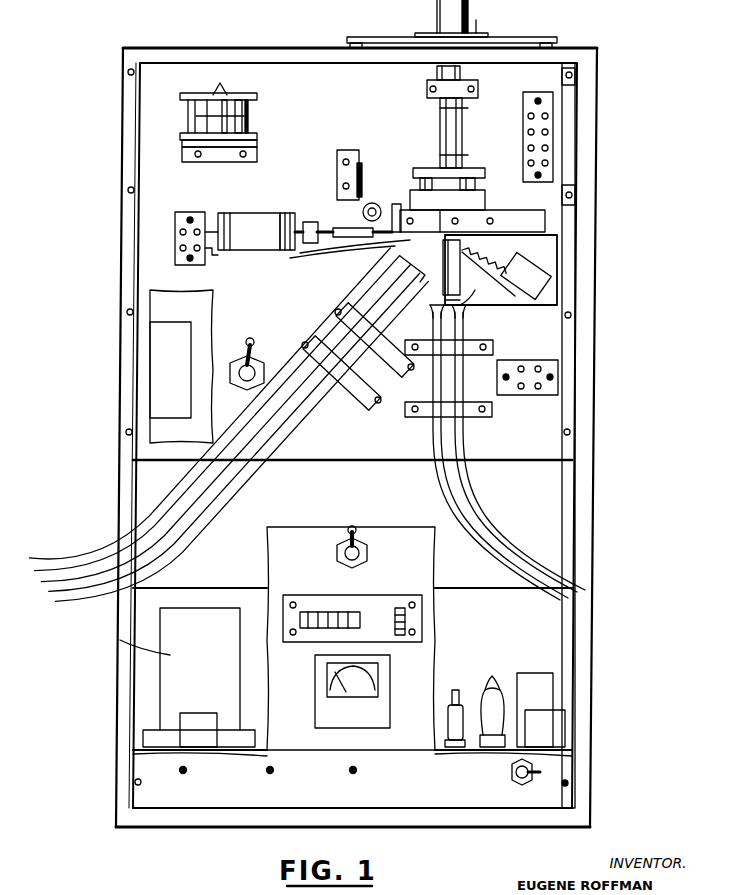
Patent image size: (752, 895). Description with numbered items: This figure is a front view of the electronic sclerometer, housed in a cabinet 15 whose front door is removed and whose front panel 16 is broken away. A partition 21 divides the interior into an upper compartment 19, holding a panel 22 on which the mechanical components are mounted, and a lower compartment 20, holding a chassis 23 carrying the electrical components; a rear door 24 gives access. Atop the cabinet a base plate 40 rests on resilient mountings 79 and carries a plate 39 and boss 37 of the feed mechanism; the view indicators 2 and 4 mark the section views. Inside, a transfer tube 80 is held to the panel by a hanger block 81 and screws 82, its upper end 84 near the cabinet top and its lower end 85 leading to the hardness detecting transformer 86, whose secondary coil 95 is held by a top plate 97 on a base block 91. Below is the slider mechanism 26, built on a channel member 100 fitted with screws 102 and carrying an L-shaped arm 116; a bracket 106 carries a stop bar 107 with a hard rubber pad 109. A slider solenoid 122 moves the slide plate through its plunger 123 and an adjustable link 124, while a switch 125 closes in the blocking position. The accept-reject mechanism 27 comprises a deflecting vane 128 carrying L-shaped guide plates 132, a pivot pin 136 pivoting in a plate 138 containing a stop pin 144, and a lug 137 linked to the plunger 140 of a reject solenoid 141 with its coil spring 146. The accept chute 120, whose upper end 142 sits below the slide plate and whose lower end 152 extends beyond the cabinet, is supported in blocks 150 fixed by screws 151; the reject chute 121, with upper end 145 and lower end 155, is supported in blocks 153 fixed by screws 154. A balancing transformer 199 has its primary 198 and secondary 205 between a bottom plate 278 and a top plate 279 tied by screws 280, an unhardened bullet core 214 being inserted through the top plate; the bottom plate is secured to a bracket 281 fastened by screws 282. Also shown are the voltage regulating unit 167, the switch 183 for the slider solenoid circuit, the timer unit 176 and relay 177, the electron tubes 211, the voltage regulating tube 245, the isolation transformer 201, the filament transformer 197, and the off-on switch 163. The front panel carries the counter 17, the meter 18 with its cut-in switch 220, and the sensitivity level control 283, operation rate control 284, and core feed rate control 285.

The cabinet 15 is at (122, 135).
The upper compartment 19 is at (560, 496).
The rear door 24 is at (150, 486).
The panel 22 is at (370, 470).
The lower compartment 20 is at (580, 634).
The partition 21 is at (478, 584).
The resilient mountings 79 is at (360, 38).
The base plate 40 is at (420, 33).
The boss 37 is at (470, 14).
The plate 39 is at (478, 33).
The screws 82 is at (428, 88).
The hanger block 81 is at (432, 98).
The section line 4 is at (482, 88).
The transfer tube 80 is at (464, 131).
The upper end of transfer tube 84 is at (468, 108).
The lower end of transfer tube 85 is at (468, 155).
The hardness detecting transformer 86 is at (420, 168).
The secondary coil 95 is at (445, 178).
The top plate 97 is at (418, 172).
The section line 2 is at (400, 163).
The pad 109 is at (400, 206).
The base block 91 is at (462, 196).
The slider mechanism 26 is at (528, 210).
The screws 102 is at (455, 221).
The stop bar 107 is at (394, 210).
The L-shaped arm 116 is at (562, 185).
The switch 125 is at (349, 150).
The adjustable link 124 is at (363, 214).
The plunger 123 is at (305, 222).
The slider solenoid 122 is at (272, 212).
The channel member 100 is at (392, 247).
The bracket 106 is at (345, 252).
The accept-reject mechanism 27 is at (410, 270).
The secondary 205 is at (257, 97).
The unhardened bullet core 214 is at (220, 86).
The top plate 279 is at (250, 96).
The screws 280 is at (190, 110).
The balancing transformer 199 is at (265, 118).
The primary 198 is at (250, 128).
The screws 282 is at (198, 154).
The bottom plate 278 is at (180, 140).
The bracket 281 is at (260, 153).
The L-shaped guide plates 132 is at (447, 282).
The coil spring 146 is at (560, 268).
The plunger 140 is at (555, 282).
The reject solenoid 141 is at (556, 300).
The lug 137 is at (558, 240).
The plate 138 is at (558, 226).
The stop pin 144 is at (470, 300).
The pivot pin 136 is at (525, 303).
The accept chute 120 is at (480, 447).
The deflecting vane 128 is at (521, 337).
The upper end of accept chute 142 is at (455, 381).
The screws 151 is at (410, 410).
The lower end of accept chute 152 is at (595, 585).
The upper end of reject chute 145 is at (348, 298).
The blocks 153 is at (348, 318).
The screws 154 is at (330, 350).
The blocks 150 is at (400, 380).
The reject chute 121 is at (300, 440).
The lower end of reject chute 155 is at (70, 575).
The voltage regulating unit 167 is at (156, 368).
The switch 183 is at (250, 340).
The front panel 16 is at (285, 533).
The cut-in switch 220 is at (353, 532).
The electrically-operated counter 17 is at (380, 595).
The electric meter 18 is at (315, 690).
The chassis 23 is at (262, 738).
The electro-mechanical timer unit 176 is at (140, 642).
The relay 177 is at (196, 713).
The electron tubes 211 is at (452, 710).
The voltage regulating tube 245 is at (493, 676).
The isolation transformer 201 is at (545, 688).
The filament transformer 197 is at (550, 725).
The switch 163 is at (540, 772).
The core feed rate control 285 is at (183, 773).
The operation rate control 284 is at (268, 774).
The sensitivity level control 283 is at (354, 774).